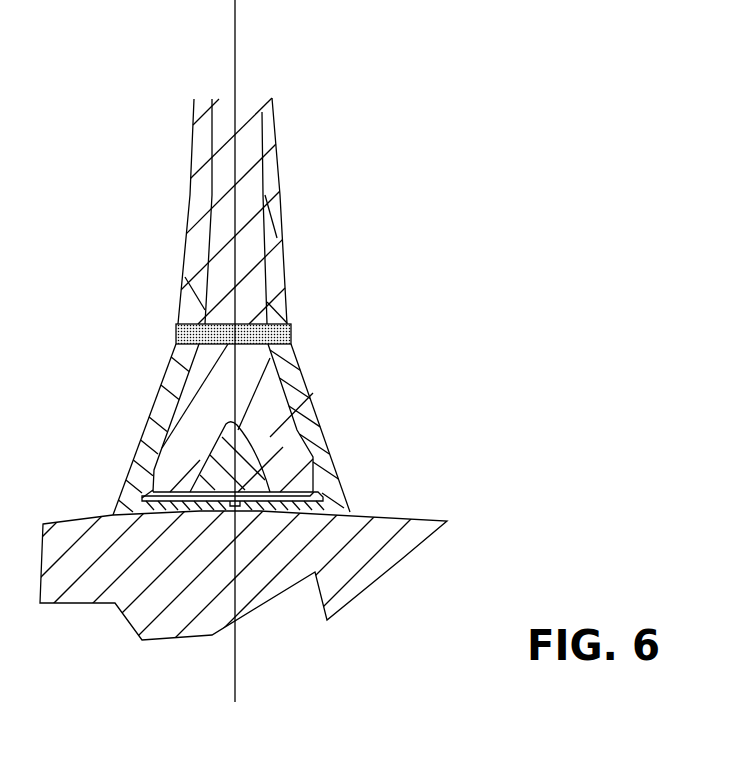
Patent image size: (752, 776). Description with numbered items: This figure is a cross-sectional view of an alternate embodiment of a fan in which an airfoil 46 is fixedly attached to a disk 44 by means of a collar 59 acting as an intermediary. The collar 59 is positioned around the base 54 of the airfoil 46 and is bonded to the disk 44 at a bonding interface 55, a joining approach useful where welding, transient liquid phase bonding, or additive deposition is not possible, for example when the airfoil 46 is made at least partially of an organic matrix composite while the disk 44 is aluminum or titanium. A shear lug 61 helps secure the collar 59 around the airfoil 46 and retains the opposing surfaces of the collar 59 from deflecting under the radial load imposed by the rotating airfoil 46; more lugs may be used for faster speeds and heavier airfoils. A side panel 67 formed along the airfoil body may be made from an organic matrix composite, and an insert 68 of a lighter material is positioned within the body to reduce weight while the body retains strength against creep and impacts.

The disk 44 is at (403, 560).
The airfoil 46 is at (278, 208).
The base 54 is at (177, 473).
The bonding interface 55 is at (322, 505).
The collar 59 is at (298, 400).
The shear lug 61 is at (293, 322).
The side panel 67 is at (200, 199).
The insert 68 is at (243, 452).